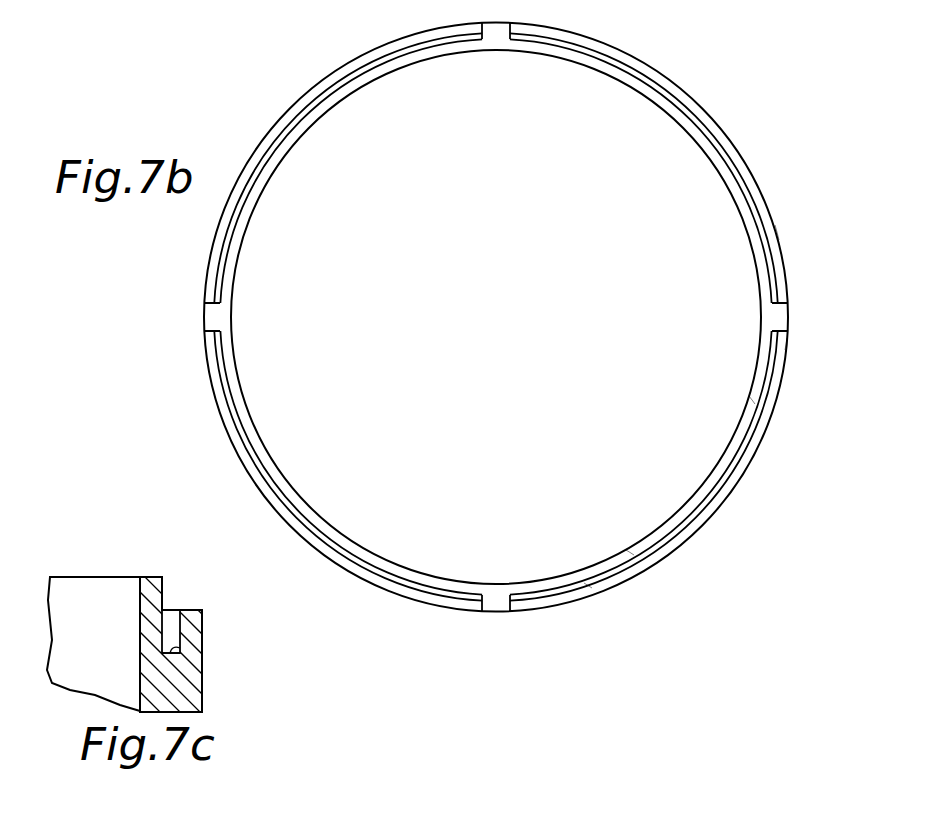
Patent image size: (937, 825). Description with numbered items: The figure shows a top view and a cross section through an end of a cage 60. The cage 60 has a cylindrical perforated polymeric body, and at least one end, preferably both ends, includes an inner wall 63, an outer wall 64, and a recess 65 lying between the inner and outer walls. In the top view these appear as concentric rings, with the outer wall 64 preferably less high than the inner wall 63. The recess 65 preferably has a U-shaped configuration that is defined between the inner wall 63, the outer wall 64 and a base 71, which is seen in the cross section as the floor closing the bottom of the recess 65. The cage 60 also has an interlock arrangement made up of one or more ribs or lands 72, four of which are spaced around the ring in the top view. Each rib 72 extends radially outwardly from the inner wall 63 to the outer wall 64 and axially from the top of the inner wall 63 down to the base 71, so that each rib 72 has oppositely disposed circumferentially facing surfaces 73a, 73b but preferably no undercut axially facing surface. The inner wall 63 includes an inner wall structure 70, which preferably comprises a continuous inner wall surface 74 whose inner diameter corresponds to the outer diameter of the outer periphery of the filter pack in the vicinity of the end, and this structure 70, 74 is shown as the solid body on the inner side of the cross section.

In FIG. 7B, the cage 60 is at (190, 370).
In FIG. 7B, the inner wall 63 is at (673, 523).
In FIG. 7C, the inner wall 63 is at (148, 583).
In FIG. 7B, the outer wall 64 is at (755, 438).
In FIG. 7C, the outer wall 64 is at (197, 615).
In FIG. 7B, the recess 65 is at (723, 477).
In FIG. 7C, the recess 65 is at (172, 617).
In FIG. 7B, the inner wall structure 70 is at (630, 552).
In FIG. 7C, the inner wall structure 70 is at (80, 607).
In FIG. 7B, the base 71 is at (588, 585).
In FIG. 7C, the base 71 is at (203, 640).
In FIG. 7B, the ribs or lands 72 is at (780, 313).
In FIG. 7B, the circumferentially facing surface 73a is at (782, 345).
In FIG. 7B, the circumferentially facing surface 73b is at (778, 232).
In FIG. 7B, the continuous inner wall surface 74 is at (750, 400).
In FIG. 7C, the continuous inner wall surface 74 is at (100, 617).